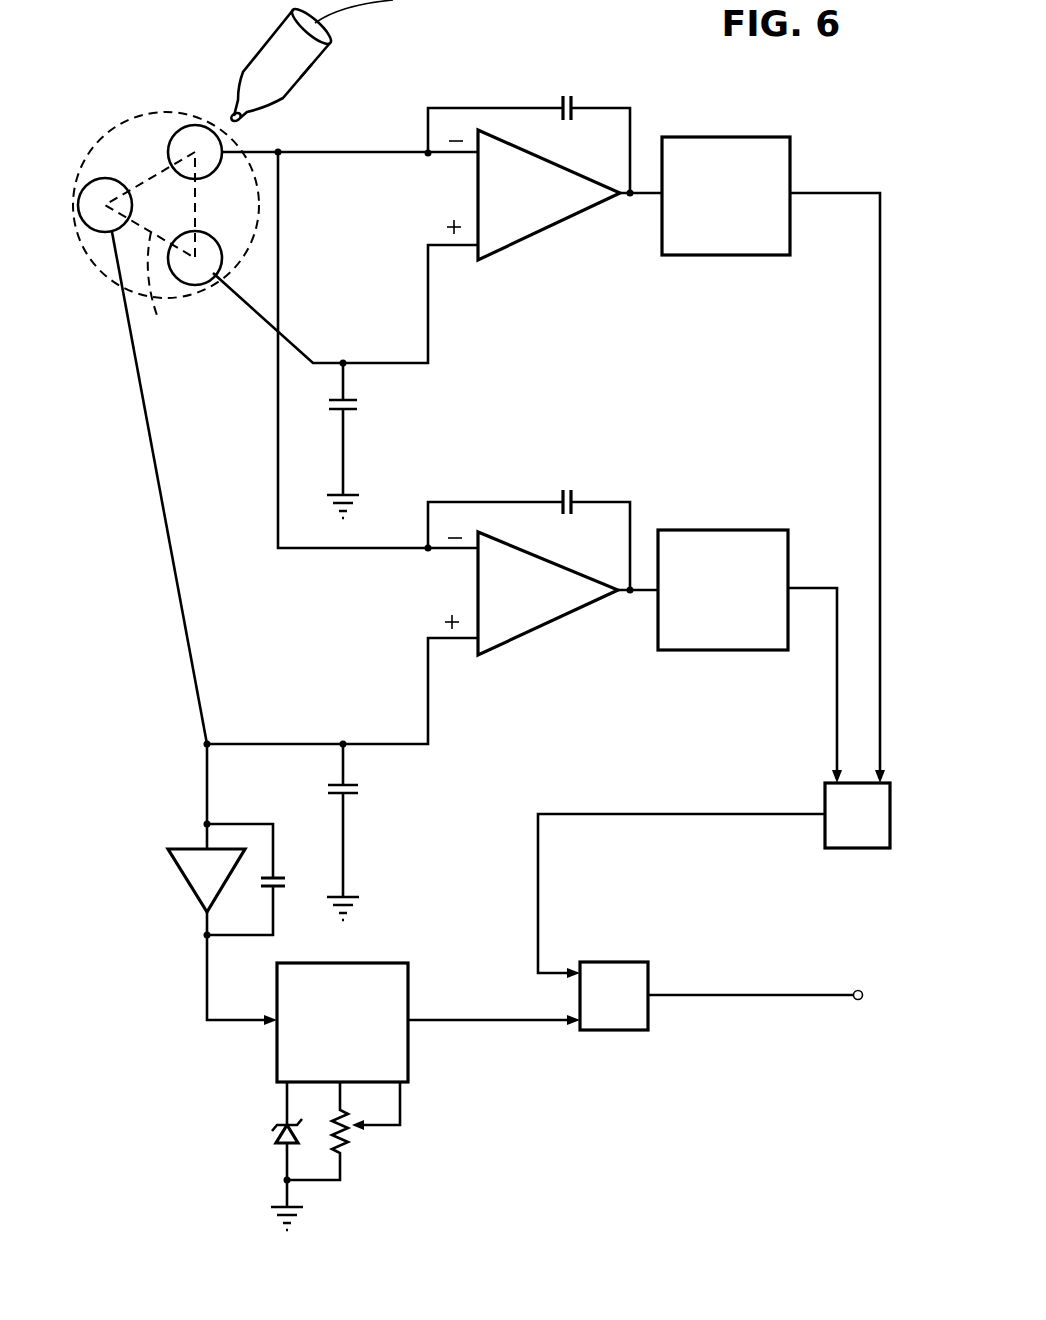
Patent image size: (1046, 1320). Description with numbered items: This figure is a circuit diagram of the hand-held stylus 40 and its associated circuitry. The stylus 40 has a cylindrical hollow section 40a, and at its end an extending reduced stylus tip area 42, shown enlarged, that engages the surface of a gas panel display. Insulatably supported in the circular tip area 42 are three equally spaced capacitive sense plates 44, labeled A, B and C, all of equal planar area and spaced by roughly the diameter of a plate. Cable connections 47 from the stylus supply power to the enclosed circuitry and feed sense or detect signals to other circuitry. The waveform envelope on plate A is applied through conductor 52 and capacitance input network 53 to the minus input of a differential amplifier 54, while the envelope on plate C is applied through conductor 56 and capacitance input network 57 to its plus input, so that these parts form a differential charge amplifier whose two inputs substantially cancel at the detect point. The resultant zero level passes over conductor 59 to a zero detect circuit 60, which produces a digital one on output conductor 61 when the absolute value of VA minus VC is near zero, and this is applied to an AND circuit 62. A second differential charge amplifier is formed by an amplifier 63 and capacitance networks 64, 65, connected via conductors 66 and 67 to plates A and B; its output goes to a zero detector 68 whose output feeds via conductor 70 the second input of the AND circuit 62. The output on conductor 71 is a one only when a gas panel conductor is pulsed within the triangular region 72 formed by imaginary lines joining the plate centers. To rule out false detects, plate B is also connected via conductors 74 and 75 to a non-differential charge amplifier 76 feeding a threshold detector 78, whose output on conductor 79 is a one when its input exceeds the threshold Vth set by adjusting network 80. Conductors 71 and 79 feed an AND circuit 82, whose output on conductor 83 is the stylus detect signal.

The hand-held stylus 40 is at (282, 63).
The cylindrical hollow section 40a is at (334, 71).
The stylus tip area 42 is at (166, 180).
The capacitive sense plates 44 is at (152, 179).
The cable connections 47 is at (361, 20).
The conductor 52 is at (350, 133).
The capacitance input network 53 is at (528, 119).
The differential amplifier 54 is at (533, 195).
The conductor 56 is at (345, 306).
The capacitance input network 57 is at (376, 440).
The conductor 59 is at (637, 216).
The zero detect circuit 60 is at (726, 174).
The output conductor 61 is at (837, 466).
The AND circuit 62 is at (857, 836).
The amplifier 63 is at (531, 593).
The capacitance network 64 is at (529, 511).
The capacitance network 65 is at (378, 832).
The conductor 66 is at (354, 352).
The conductor 67 is at (341, 693).
The zero detector 68 is at (703, 569).
The conductor 70 is at (815, 685).
The conductor 71 is at (681, 874).
The triangular region 72 is at (159, 286).
The conductor 74 is at (157, 488).
The conductor 75 is at (186, 796).
The non-differential charge amplifier 76 is at (209, 924).
The threshold detector 78 is at (346, 1005).
The conductor 79 is at (494, 1001).
The network 80 is at (360, 1156).
The AND circuit 82 is at (614, 1021).
The conductor 83 is at (796, 1006).